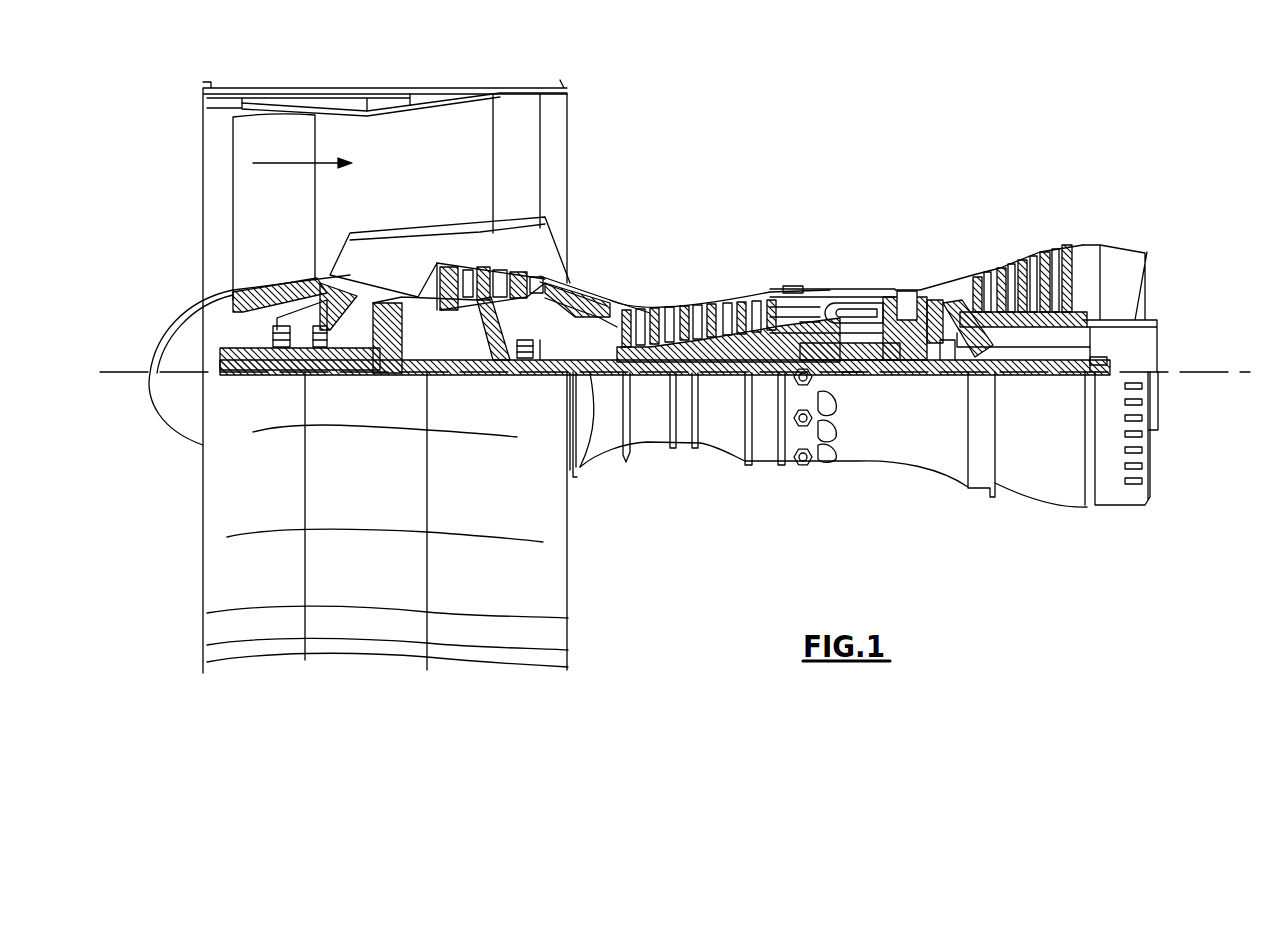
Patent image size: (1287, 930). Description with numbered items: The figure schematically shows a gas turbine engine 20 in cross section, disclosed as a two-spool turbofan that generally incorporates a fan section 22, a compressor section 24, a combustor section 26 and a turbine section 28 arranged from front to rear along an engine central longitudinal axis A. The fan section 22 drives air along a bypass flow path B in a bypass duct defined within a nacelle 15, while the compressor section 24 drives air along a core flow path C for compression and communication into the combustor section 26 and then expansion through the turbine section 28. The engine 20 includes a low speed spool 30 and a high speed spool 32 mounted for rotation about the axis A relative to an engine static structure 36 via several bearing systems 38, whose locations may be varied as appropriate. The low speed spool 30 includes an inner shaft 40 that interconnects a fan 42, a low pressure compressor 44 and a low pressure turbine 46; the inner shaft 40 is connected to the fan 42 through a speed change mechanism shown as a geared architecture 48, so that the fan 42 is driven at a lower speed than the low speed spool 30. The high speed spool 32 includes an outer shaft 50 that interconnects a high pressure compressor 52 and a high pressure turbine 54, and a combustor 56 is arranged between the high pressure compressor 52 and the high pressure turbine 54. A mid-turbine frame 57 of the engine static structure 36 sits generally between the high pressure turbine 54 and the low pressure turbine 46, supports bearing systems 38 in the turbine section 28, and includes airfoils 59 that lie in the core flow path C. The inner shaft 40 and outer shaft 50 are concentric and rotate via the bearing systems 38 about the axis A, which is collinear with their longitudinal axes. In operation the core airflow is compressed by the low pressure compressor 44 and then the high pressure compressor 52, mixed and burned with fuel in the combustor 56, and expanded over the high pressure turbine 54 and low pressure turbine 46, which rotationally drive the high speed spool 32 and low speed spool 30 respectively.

The nacelle 15 is at (385, 88).
The gas turbine engine 20 is at (844, 137).
The fan section 22 is at (318, 83).
The compressor section 24 is at (614, 285).
The combustor section 26 is at (838, 272).
The turbine section 28 is at (984, 234).
The low speed spool 30 is at (723, 376).
The high speed spool 32 is at (768, 330).
The engine static structure 36 is at (765, 461).
The bearing systems 38 is at (527, 373).
The inner shaft 40 is at (588, 378).
The fan 42 is at (290, 219).
The low pressure compressor 44 is at (484, 280).
The low pressure turbine 46 is at (1033, 265).
The geared architecture 48 is at (392, 373).
The outer shaft 50 is at (850, 374).
The high pressure compressor 52 is at (697, 347).
The high pressure turbine 54 is at (902, 297).
The combustor 56 is at (842, 313).
The mid-turbine frame 57 is at (953, 277).
The airfoils 59 is at (985, 346).
The engine central longitudinal axis A is at (1240, 372).
The bypass flow path B is at (292, 163).
The core flow path C is at (393, 272).